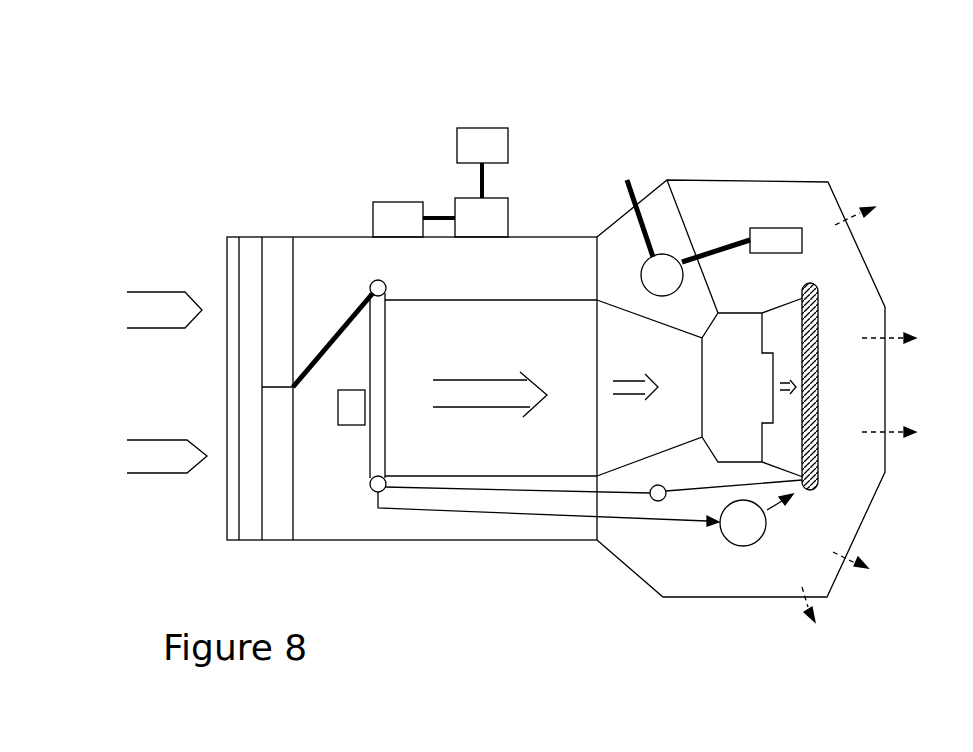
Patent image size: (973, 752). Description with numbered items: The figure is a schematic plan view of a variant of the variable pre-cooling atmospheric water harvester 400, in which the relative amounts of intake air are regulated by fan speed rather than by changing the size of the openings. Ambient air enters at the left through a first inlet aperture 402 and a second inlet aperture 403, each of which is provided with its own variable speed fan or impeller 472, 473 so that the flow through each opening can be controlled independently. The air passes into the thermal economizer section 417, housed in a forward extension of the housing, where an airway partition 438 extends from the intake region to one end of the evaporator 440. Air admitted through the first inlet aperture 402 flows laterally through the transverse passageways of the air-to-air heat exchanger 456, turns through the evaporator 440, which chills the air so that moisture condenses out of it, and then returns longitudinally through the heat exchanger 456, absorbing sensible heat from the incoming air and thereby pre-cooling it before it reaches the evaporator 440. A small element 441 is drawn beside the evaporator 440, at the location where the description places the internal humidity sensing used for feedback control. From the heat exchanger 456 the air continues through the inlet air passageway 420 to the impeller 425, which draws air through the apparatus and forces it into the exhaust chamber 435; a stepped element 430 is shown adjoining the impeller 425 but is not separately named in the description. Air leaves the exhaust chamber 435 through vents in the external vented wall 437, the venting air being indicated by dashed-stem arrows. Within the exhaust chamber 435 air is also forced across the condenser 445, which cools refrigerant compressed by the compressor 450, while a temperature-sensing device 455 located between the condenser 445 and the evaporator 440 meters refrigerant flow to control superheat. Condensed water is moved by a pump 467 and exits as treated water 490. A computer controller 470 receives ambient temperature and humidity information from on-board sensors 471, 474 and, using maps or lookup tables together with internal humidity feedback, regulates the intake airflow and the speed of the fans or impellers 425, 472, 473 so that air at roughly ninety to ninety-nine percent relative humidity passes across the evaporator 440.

The atmospheric water harvester 400 is at (660, 150).
The first inlet aperture 402 is at (145, 322).
The second inlet aperture 403 is at (145, 468).
The thermal economizer section 417 is at (260, 575).
The impeller inlet air passageway 420 is at (624, 364).
The impeller 425 is at (723, 394).
The baffle 430 is at (782, 387).
The exhaust chamber 435 is at (741, 388).
The external vented wall 437 is at (837, 193).
The airway partition 438 is at (333, 332).
The evaporator 440 is at (377, 445).
The actuator 441 is at (343, 396).
The condenser 445 is at (800, 293).
The compressor 450 is at (756, 520).
The temperature-sensing device 455 is at (593, 480).
The air-to-air heat exchanger 456 is at (457, 356).
The pump 467 is at (776, 240).
The computer controller 470 is at (602, 247).
The temperature and humidity sensor 471 is at (482, 163).
The variable speed fan 472 is at (278, 312).
The variable speed fan 473 is at (278, 465).
The temperature and humidity sensor 474 is at (414, 219).
The treated water 490 is at (625, 187).